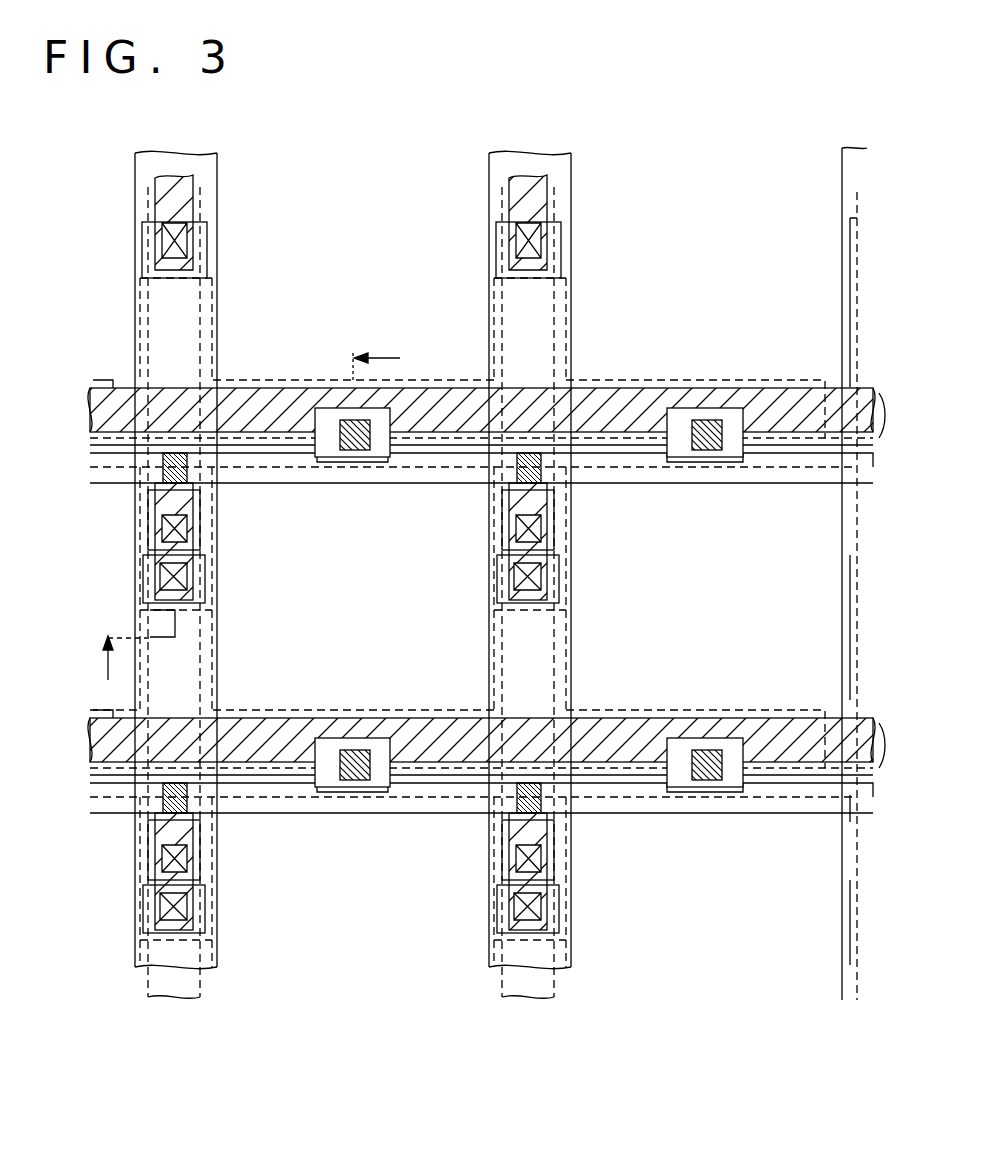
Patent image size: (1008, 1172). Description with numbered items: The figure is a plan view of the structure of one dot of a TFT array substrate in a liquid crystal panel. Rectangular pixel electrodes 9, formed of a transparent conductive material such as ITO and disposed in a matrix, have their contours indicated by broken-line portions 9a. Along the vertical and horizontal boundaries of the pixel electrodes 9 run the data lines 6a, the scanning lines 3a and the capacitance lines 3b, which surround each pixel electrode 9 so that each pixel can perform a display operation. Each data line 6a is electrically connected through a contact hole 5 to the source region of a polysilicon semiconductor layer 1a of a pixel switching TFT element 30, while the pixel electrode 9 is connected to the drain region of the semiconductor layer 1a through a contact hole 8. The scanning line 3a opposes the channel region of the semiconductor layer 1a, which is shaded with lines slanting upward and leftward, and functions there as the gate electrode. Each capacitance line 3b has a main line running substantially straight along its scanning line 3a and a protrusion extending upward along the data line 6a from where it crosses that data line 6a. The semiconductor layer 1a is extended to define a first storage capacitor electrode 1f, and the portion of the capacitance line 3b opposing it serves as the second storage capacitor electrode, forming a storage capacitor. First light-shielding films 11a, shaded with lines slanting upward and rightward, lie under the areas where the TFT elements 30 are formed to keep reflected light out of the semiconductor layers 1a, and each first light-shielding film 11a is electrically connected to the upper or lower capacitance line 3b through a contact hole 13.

The TFT element 30 is at (232, 874).
The contact hole 13 is at (214, 566).
The data line 6a is at (570, 572).
The first storage capacitor electrode 1f is at (215, 632).
The first light-shielding film 11a is at (214, 697).
The contact hole 5 is at (542, 851).
The capacitance line 3b is at (341, 716).
The scanning line 3a is at (374, 814).
The broken-line portion 9a is at (800, 466).
The pixel electrode 9 is at (367, 585).
The semiconductor layer 1a is at (541, 810).
The contact hole 8 is at (701, 778).